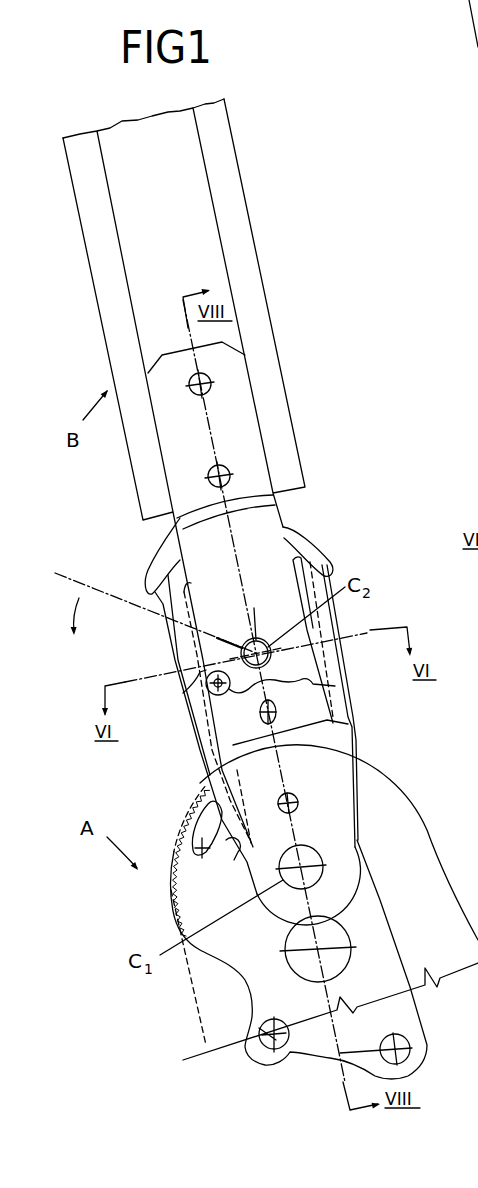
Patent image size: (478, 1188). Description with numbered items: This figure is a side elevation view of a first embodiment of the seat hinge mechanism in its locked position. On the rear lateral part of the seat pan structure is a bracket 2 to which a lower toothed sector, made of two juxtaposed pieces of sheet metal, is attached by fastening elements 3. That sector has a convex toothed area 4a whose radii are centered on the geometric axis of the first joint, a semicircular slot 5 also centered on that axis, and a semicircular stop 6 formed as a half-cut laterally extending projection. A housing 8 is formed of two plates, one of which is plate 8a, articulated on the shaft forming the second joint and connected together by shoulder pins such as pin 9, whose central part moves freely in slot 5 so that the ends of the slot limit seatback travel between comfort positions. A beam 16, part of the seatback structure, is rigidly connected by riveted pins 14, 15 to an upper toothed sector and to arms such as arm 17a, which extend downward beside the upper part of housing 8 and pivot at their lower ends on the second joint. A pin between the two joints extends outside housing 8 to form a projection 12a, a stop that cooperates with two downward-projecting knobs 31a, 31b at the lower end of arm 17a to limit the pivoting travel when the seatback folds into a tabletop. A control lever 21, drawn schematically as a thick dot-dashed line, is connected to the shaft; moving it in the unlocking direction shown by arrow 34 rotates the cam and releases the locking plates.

The bracket 2 is at (400, 787).
The fastening elements 3 is at (285, 1045).
The convex toothed area 4a is at (197, 793).
The semicircular slot 5 is at (227, 850).
The semicircular stop 6 is at (206, 827).
The housing 8 is at (340, 626).
The plate of housing 8a is at (353, 717).
The shoulder pin 9 is at (297, 802).
The projection 12a is at (207, 675).
The pin 14 is at (213, 383).
The pin 15 is at (232, 475).
The beam 16 is at (257, 328).
The arm 17a is at (240, 438).
The control lever 21 is at (80, 580).
The knob 31a is at (183, 693).
The knob 31b is at (335, 686).
The arrow 34 is at (90, 618).